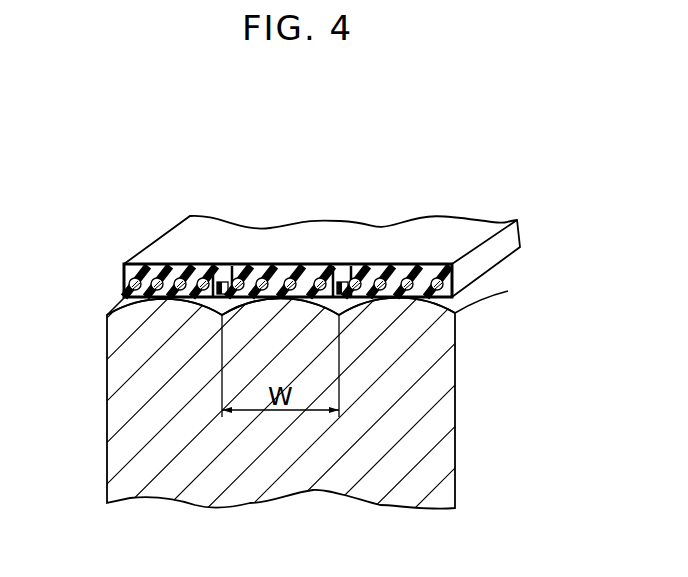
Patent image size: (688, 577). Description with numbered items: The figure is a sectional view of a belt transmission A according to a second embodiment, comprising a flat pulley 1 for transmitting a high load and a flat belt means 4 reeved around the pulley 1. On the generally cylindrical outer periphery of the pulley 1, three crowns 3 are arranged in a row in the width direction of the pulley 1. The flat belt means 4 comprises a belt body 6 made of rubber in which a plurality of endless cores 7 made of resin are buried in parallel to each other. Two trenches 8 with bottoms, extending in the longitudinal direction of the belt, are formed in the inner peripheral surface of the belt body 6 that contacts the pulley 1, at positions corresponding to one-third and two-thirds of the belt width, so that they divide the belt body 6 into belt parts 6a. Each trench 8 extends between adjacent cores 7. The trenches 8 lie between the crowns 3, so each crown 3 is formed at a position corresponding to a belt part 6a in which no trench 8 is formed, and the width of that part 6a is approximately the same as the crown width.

The flat pulley 1 is at (107, 430).
The crown 3 is at (155, 262).
The flat belt means 4 is at (482, 220).
The belt body 6 is at (327, 264).
The belt part 6a is at (151, 303).
The endless core 7 is at (207, 264).
The trench 8 is at (232, 264).
The belt transmission A is at (89, 119).